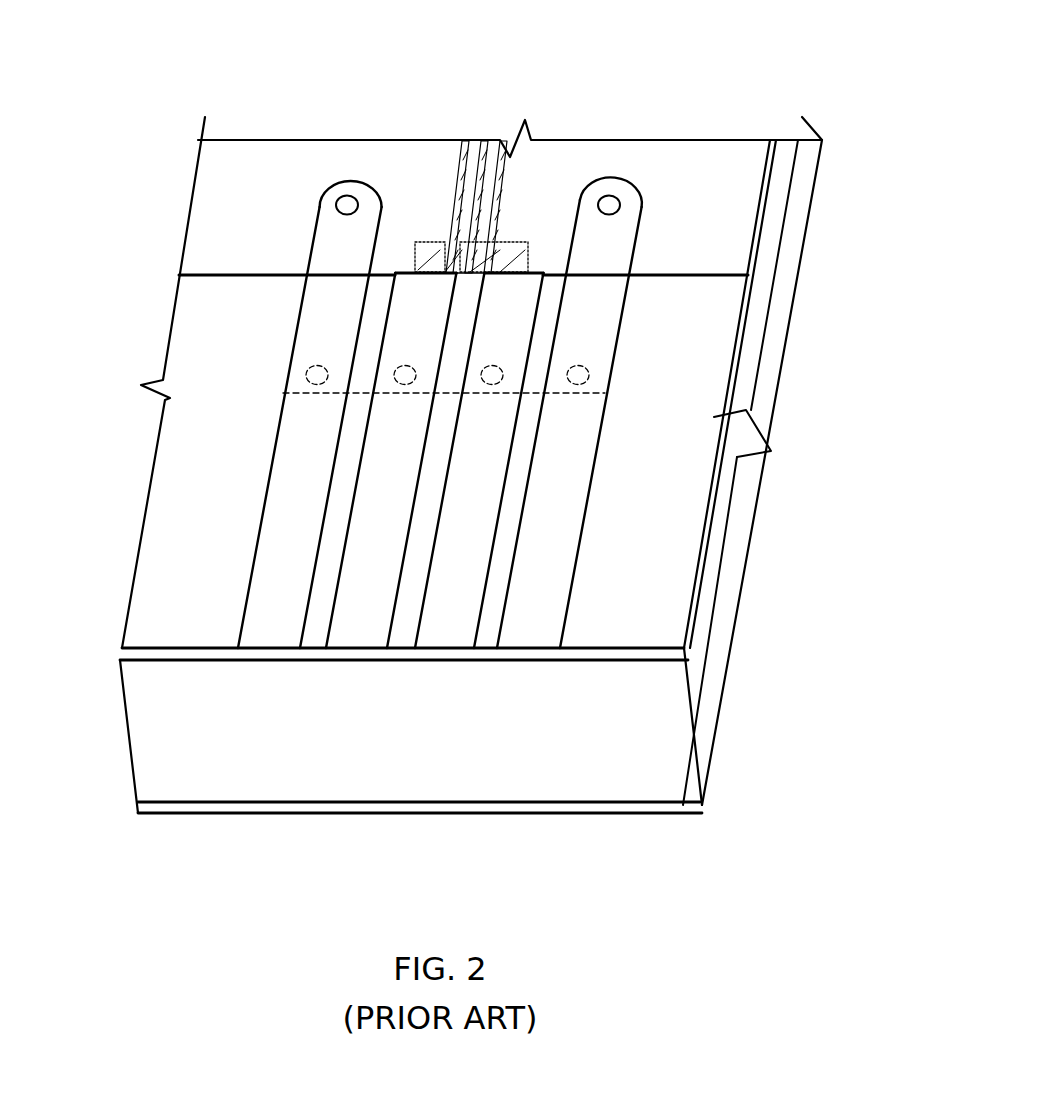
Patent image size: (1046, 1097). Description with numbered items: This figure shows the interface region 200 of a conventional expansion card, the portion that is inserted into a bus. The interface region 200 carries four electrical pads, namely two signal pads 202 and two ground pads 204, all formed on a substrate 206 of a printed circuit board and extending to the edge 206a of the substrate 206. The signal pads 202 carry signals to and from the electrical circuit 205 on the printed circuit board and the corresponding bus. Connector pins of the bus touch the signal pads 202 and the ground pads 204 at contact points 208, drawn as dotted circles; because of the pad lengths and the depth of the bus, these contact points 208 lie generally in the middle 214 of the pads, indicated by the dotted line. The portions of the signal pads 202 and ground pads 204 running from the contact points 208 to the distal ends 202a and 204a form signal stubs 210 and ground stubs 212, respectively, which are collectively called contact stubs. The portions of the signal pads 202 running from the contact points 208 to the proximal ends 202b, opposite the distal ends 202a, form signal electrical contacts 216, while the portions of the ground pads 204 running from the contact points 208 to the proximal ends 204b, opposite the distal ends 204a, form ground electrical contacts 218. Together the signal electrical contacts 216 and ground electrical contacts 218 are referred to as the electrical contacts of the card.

The interface region 200 is at (196, 97).
The signal pads 202 is at (375, 536).
The distal ends of signal pads 202a is at (340, 648).
The proximal ends of signal pads 202b is at (430, 272).
The ground pads 204 is at (240, 358).
The distal ends of ground pads 204a is at (250, 648).
The proximal ends of ground pads 204b is at (345, 183).
The electrical circuit 205 is at (481, 190).
The substrate 206 is at (175, 570).
The edge of substrate 206a is at (688, 646).
The contact points 208 is at (312, 366).
The signal stubs 210 is at (363, 617).
The ground stubs 212 is at (290, 440).
The middle of the pads 214 is at (605, 393).
The signal electrical contacts 216 is at (405, 293).
The ground electrical contacts 218 is at (330, 235).